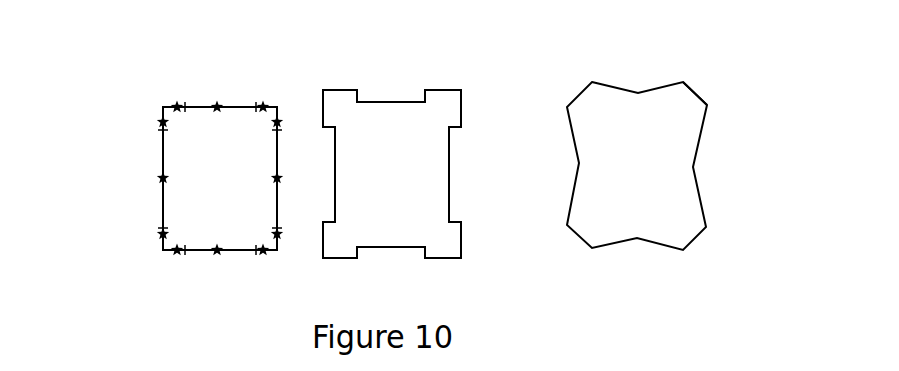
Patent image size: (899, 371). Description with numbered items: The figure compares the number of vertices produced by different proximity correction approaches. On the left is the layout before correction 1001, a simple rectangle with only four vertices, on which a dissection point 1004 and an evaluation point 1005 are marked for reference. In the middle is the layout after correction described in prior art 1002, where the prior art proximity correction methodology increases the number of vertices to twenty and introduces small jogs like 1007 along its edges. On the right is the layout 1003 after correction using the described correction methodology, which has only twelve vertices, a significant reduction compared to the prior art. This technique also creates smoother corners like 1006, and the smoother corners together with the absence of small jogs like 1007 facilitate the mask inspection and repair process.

The layout before correction 1001 is at (215, 160).
The layout after correction described in prior art 1002 is at (392, 162).
The layout after correction using the correction methodology 1003 is at (643, 159).
The dissection point 1004 is at (141, 127).
The evaluation point 1005 is at (141, 175).
The smoother corner 1006 is at (705, 86).
The small jog 1007 is at (458, 202).